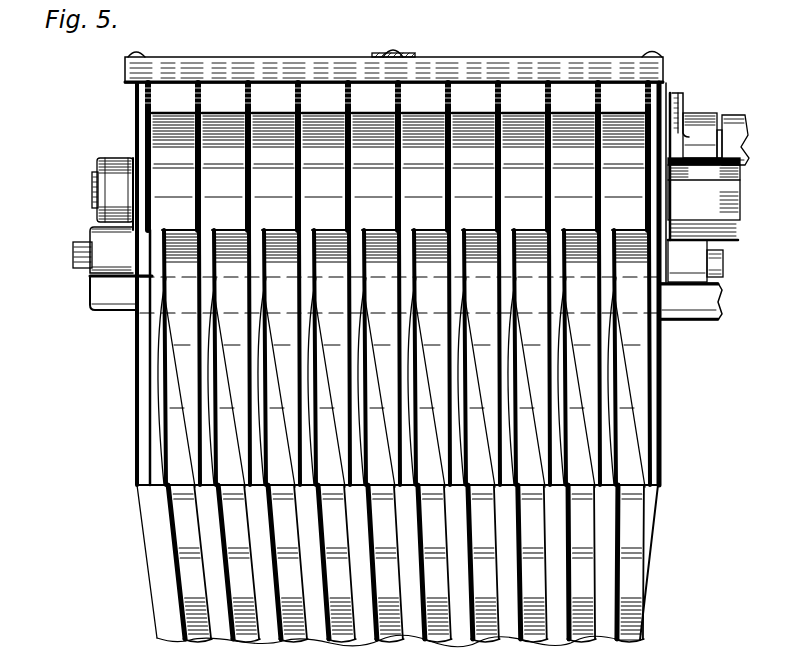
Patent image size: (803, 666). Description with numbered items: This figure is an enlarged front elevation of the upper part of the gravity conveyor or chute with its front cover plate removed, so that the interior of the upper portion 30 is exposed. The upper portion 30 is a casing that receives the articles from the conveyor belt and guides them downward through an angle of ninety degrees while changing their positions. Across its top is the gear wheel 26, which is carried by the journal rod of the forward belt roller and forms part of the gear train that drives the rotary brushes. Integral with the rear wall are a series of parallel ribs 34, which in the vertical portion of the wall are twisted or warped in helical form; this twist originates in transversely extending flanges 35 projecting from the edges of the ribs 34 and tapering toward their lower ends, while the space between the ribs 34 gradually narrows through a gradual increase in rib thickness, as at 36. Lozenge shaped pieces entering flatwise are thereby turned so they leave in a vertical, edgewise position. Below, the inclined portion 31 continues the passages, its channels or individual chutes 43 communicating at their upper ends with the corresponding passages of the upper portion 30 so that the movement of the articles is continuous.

The gear wheel 26 is at (196, 78).
The ribs 34 is at (346, 213).
The transversely extending flanges 35 is at (247, 222).
The thickened portion of the ribs 36 is at (336, 441).
The upper portion of the gravity conveyor 30 is at (662, 414).
The channels or individual chutes 43 is at (622, 520).
The inclined portion of the gravity conveyor 31 is at (650, 547).